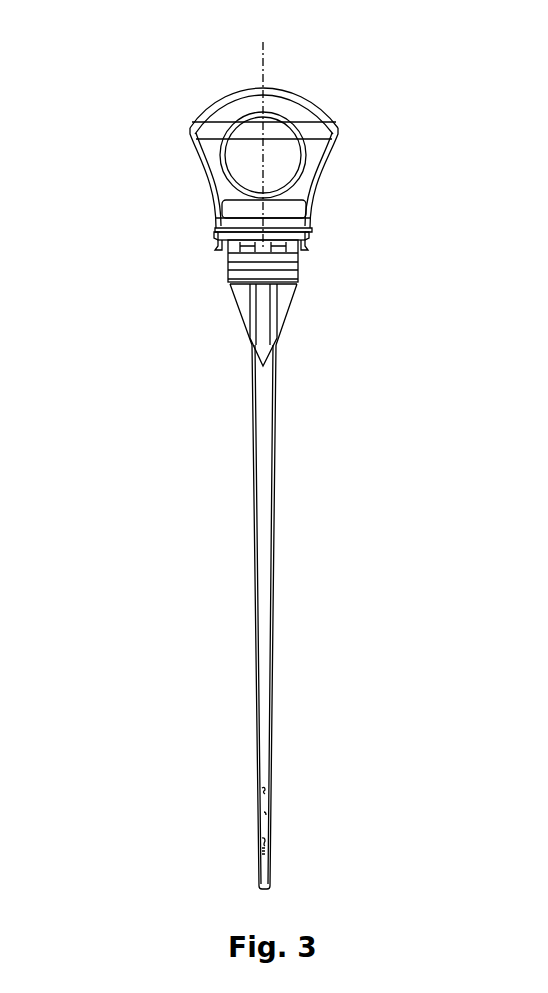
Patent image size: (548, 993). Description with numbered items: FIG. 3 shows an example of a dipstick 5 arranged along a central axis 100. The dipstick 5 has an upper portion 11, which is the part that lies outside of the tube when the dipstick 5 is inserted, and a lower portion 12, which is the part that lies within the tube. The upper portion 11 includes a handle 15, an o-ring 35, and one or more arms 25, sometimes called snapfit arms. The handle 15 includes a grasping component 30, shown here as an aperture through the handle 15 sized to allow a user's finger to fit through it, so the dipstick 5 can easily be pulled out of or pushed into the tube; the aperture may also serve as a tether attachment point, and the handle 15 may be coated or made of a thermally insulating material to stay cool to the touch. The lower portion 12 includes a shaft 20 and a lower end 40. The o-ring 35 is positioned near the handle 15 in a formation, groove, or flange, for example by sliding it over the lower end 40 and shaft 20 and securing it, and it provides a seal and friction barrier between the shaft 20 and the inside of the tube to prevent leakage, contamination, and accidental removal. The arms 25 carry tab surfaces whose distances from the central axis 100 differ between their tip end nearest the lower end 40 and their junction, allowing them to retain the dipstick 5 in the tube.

The dipstick 5 is at (425, 33).
The central axis 100 is at (264, 133).
The upper portion 11 is at (92, 90).
The lower portion 12 is at (405, 230).
The handle 15 is at (335, 133).
The grasping component 30 is at (233, 127).
The arms 25 is at (215, 247).
The o-ring 35 is at (300, 270).
The shaft 20 is at (277, 447).
The lower end 40 is at (262, 820).